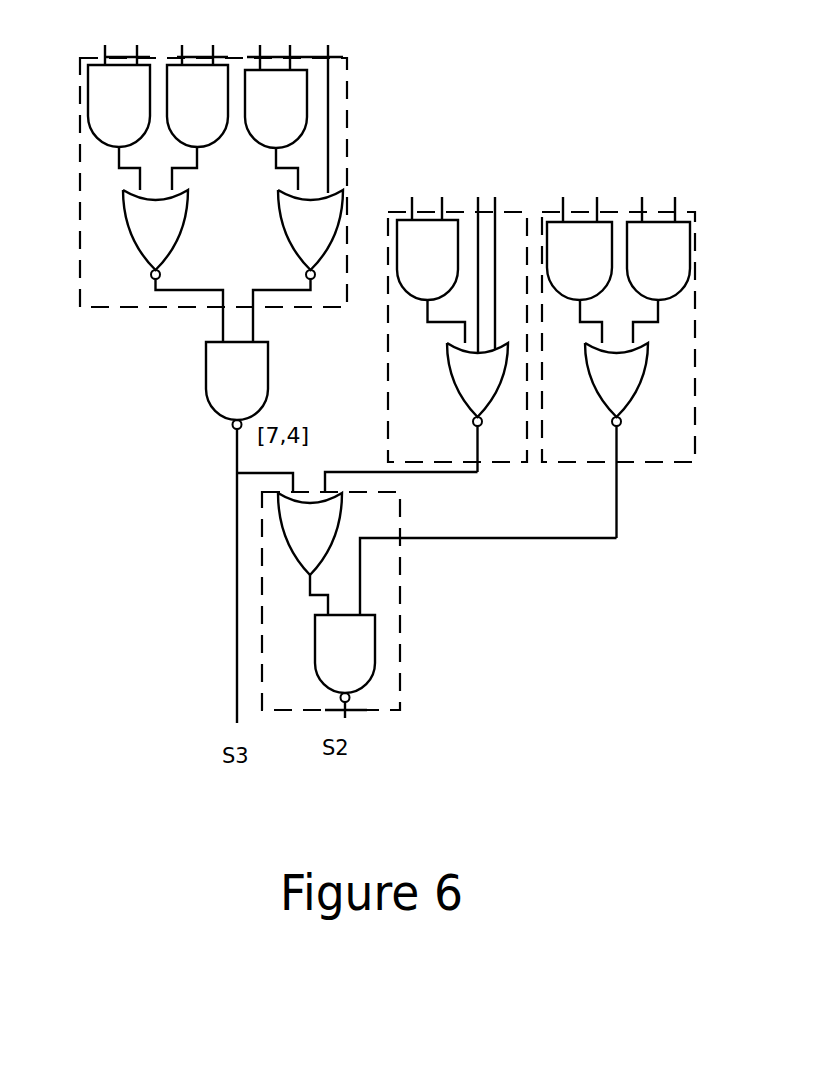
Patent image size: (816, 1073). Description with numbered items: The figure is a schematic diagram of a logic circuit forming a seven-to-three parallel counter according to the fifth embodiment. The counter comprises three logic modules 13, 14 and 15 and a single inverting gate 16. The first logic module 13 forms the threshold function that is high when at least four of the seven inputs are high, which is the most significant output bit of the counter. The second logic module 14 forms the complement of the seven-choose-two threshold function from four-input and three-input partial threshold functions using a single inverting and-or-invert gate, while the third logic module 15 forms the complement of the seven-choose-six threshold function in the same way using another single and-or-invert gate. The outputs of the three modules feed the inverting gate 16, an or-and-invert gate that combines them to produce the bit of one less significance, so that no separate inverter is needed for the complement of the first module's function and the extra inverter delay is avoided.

The logic module 13 is at (80, 119).
The logic module 14 is at (390, 250).
The logic module 15 is at (698, 240).
The inverting gate 16 is at (403, 632).